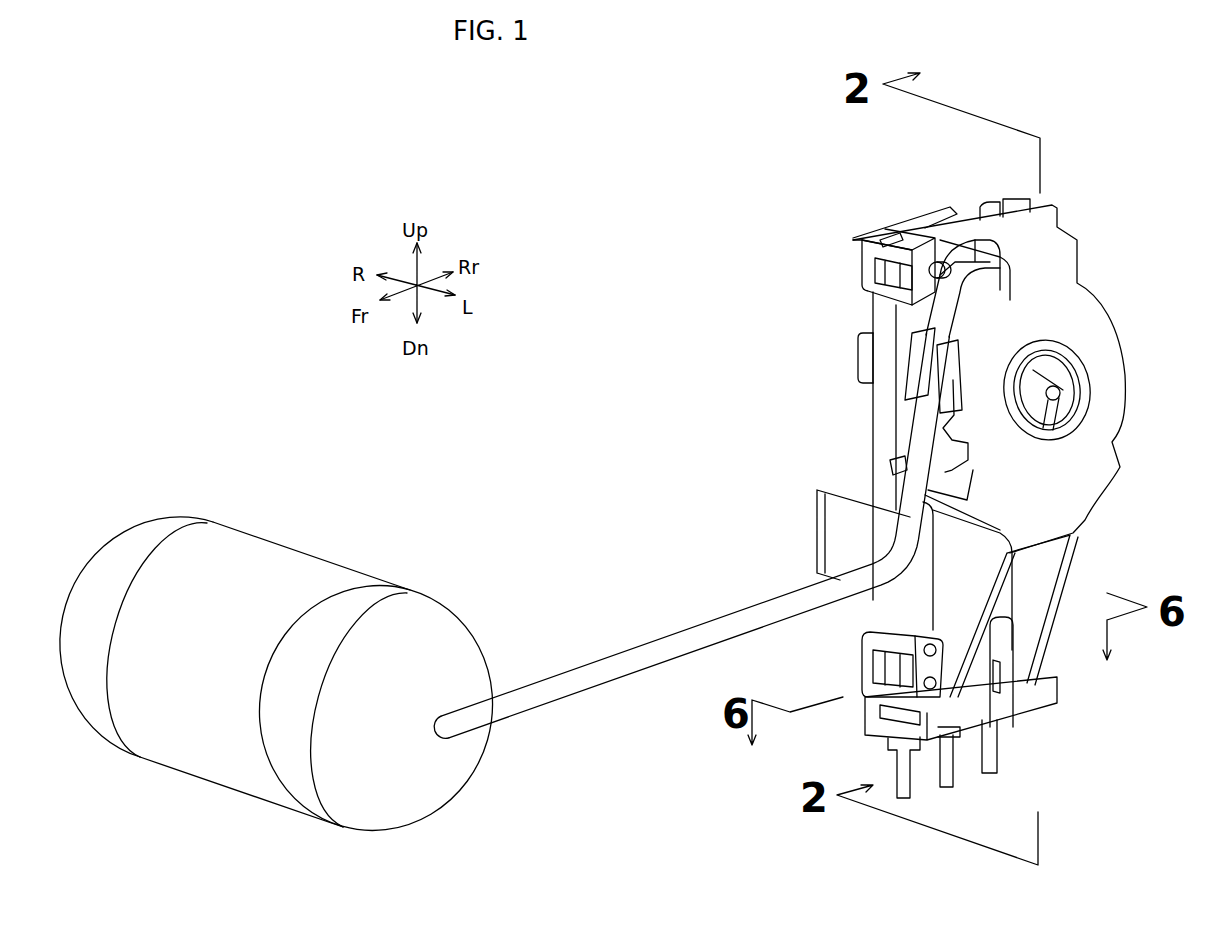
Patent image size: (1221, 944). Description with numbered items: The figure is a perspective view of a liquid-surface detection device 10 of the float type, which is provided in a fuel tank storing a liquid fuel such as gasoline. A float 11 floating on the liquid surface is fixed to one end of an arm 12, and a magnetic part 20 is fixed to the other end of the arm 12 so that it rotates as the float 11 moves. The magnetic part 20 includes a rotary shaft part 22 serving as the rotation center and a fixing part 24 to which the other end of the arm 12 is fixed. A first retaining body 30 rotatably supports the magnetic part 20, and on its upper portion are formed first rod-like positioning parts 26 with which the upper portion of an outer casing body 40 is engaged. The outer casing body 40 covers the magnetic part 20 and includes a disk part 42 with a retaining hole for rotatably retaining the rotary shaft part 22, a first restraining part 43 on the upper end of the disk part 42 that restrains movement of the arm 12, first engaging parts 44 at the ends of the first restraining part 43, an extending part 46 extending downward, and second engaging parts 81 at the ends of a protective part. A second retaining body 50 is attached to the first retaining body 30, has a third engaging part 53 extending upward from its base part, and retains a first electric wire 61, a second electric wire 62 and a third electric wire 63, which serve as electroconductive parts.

The liquid-surface detection device 10 is at (666, 215).
The float 11 is at (205, 768).
The arm 12 is at (572, 693).
The magnetic part 20 is at (938, 433).
The rotary shaft part 22 is at (1057, 403).
The fixing part 24 is at (910, 388).
The first rod-like positioning part 26 is at (935, 262).
The first retaining body 30 is at (874, 364).
The outer casing body 40 is at (1062, 188).
The disk part 42 is at (1108, 367).
The first restraining part 43 is at (1037, 233).
The first engaging part 44 is at (867, 252).
The extending part 46 is at (1007, 590).
The second retaining body 50 is at (863, 718).
The third engaging part 53 is at (997, 637).
The first electric wire 61 is at (905, 785).
The second electric wire 62 is at (953, 775).
The third electric wire 63 is at (997, 765).
The second engaging part 81 is at (870, 643).